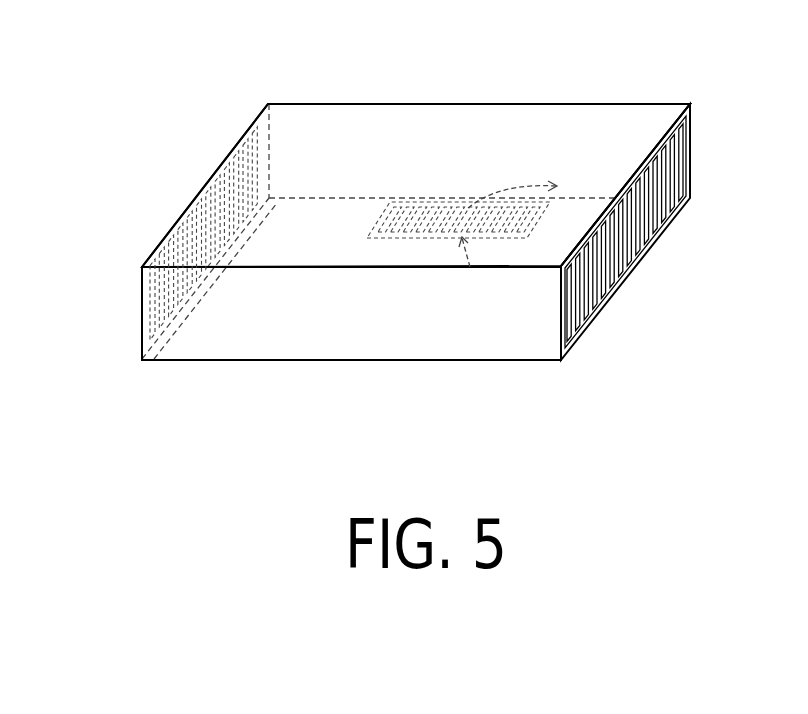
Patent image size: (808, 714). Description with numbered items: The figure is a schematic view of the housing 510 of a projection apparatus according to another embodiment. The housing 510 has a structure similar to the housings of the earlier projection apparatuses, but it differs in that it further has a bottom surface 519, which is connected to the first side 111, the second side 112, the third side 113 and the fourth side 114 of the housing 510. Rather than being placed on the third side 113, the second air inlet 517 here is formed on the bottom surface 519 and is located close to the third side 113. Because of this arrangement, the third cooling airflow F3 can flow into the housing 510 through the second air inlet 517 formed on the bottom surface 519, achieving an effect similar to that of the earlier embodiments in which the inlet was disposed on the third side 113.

The housing 510 is at (704, 454).
The first side 111 is at (687, 125).
The second side 112 is at (140, 276).
The third side 113 is at (648, 103).
The fourth side 114 is at (253, 328).
The second air inlet 517 is at (455, 210).
The bottom surface 519 is at (564, 214).
The third cooling airflow F3 is at (470, 267).